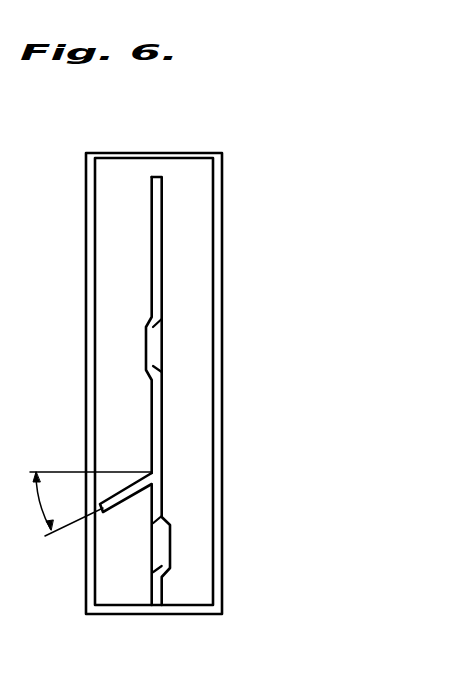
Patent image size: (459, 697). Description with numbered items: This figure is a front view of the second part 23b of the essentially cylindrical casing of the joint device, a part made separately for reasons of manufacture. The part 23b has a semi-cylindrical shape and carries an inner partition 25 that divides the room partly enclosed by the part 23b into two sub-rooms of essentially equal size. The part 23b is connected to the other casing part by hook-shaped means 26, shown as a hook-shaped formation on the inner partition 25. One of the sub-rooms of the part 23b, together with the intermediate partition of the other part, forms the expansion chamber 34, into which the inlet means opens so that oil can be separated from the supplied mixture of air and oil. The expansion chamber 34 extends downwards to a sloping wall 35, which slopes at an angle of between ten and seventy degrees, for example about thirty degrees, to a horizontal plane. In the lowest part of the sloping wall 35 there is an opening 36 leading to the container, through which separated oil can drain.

The casing part 23b is at (238, 284).
The inner partition 25 is at (157, 240).
The hook-shaped means 26 is at (157, 348).
The expansion chamber 34 is at (133, 270).
The sloping wall 35 is at (130, 500).
The opening 36 is at (99, 505).